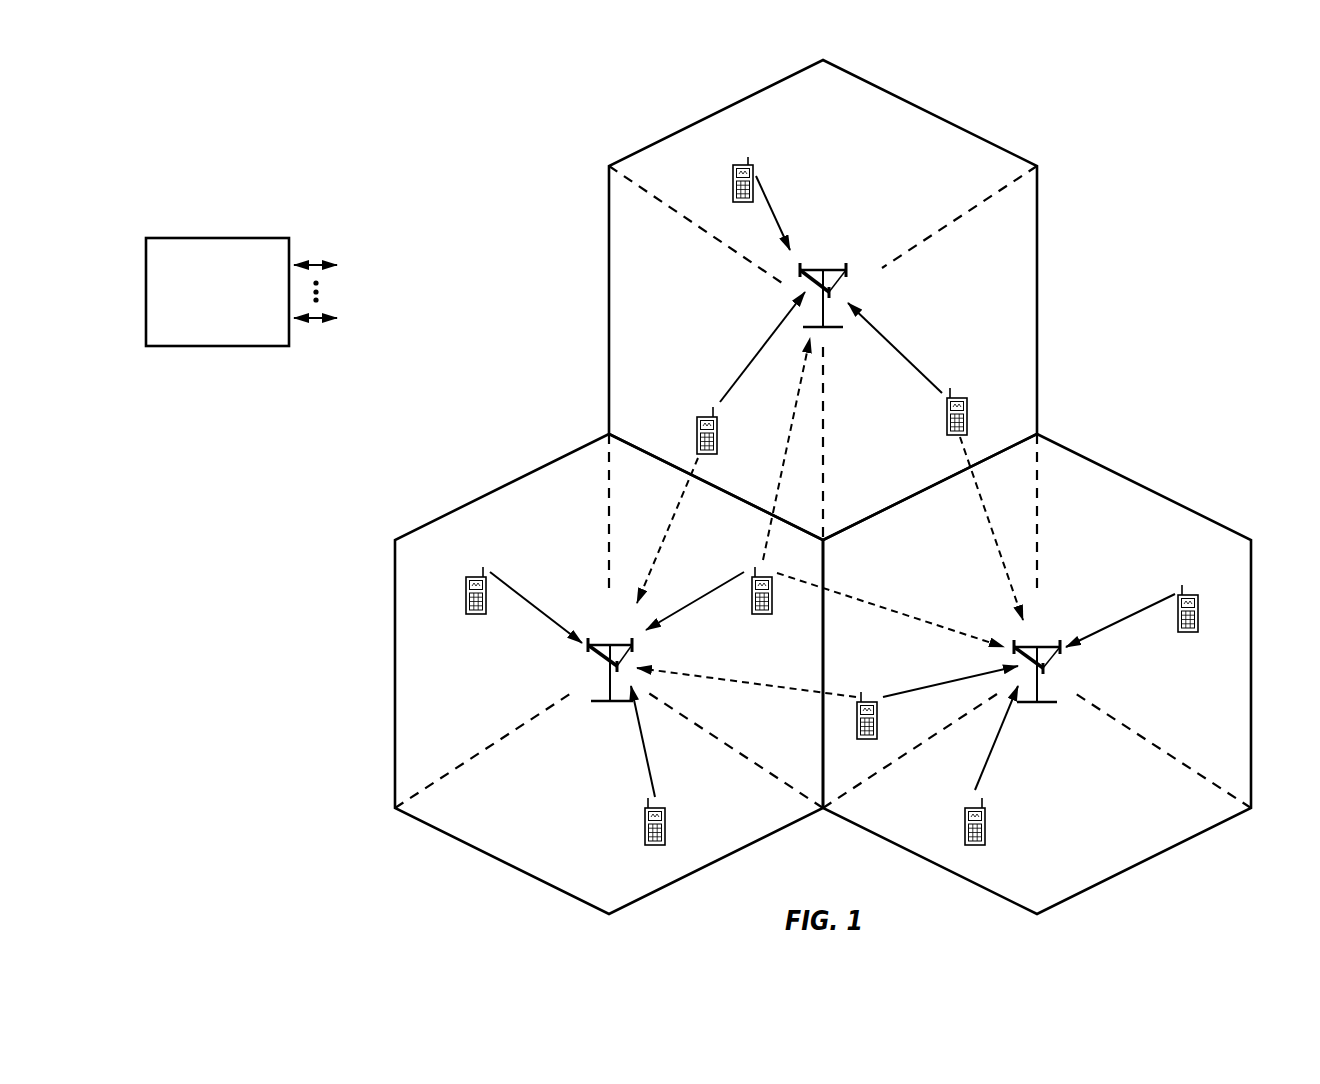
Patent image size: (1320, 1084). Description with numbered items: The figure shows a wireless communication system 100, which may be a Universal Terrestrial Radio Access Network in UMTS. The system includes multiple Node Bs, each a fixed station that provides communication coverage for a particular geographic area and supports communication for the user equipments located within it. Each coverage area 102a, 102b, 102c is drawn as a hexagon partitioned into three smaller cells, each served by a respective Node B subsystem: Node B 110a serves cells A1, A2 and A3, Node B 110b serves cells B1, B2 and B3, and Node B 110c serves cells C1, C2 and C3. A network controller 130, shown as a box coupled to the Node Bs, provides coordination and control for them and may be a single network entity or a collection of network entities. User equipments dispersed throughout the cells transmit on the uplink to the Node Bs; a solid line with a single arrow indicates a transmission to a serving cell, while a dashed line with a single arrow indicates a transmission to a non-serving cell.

The wireless communication system 100 is at (1184, 123).
The geographic coverage area 102a is at (936, 116).
The geographic coverage area 102b is at (497, 490).
The geographic coverage area 102c is at (1147, 489).
The Node B 110a is at (822, 268).
The Node B 110b is at (607, 640).
The Node B 110c is at (1039, 641).
The network controller 130 is at (213, 238).